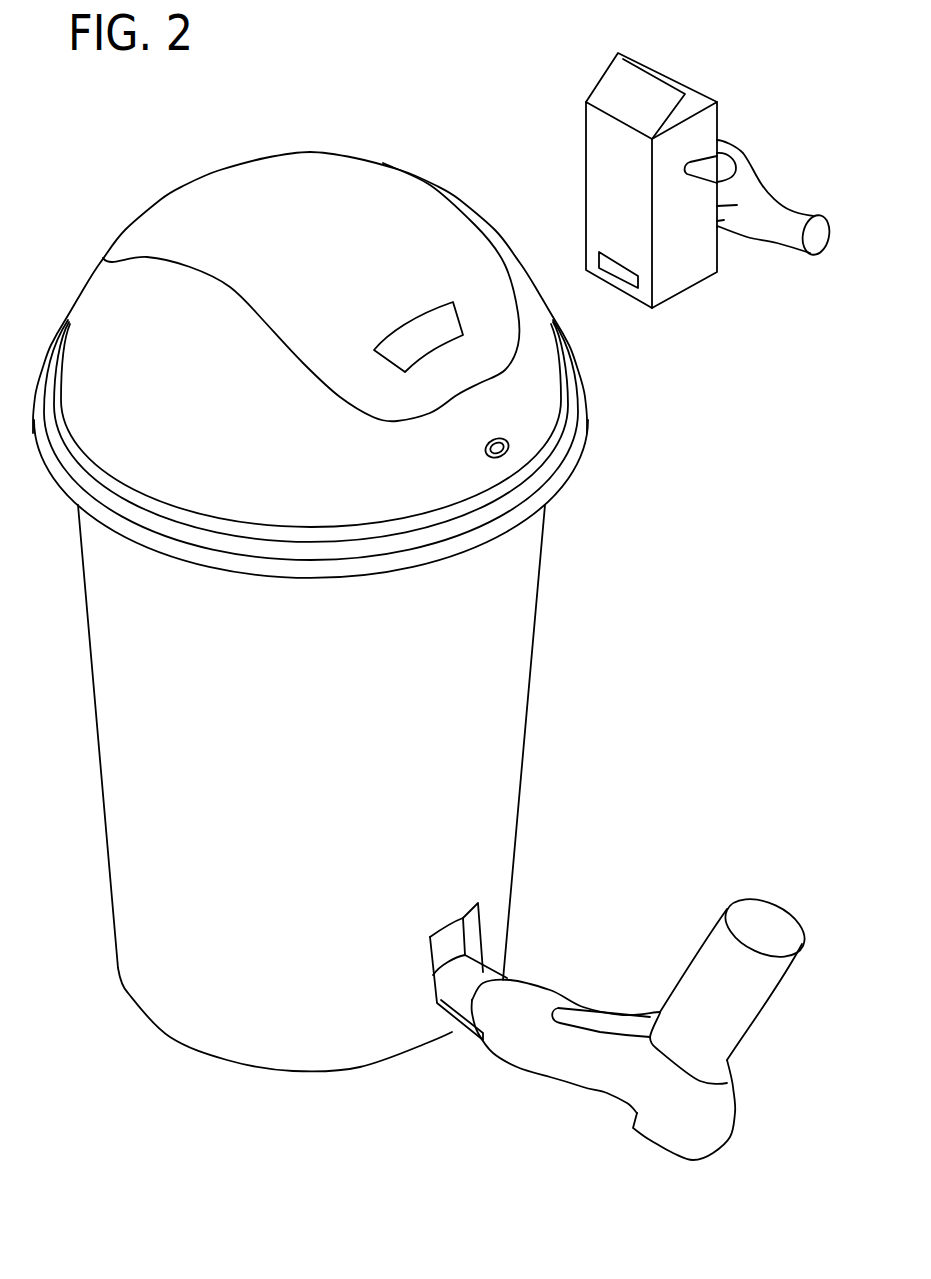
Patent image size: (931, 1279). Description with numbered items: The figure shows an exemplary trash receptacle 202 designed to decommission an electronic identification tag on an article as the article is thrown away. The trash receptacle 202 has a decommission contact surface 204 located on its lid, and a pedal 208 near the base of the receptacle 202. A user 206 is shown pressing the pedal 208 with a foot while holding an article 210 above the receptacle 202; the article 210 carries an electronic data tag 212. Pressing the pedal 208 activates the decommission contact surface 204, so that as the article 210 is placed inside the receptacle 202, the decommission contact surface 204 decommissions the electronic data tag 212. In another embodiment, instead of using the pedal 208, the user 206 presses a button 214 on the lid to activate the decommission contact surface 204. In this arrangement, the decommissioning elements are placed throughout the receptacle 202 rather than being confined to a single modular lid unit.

The trash receptacle 202 is at (527, 686).
The decommission contact surface 204 is at (438, 352).
The user 206 is at (573, 997).
The pedal 208 is at (456, 1028).
The article 210 is at (593, 83).
The electronic data tag 212 is at (620, 273).
The button 214 is at (508, 455).